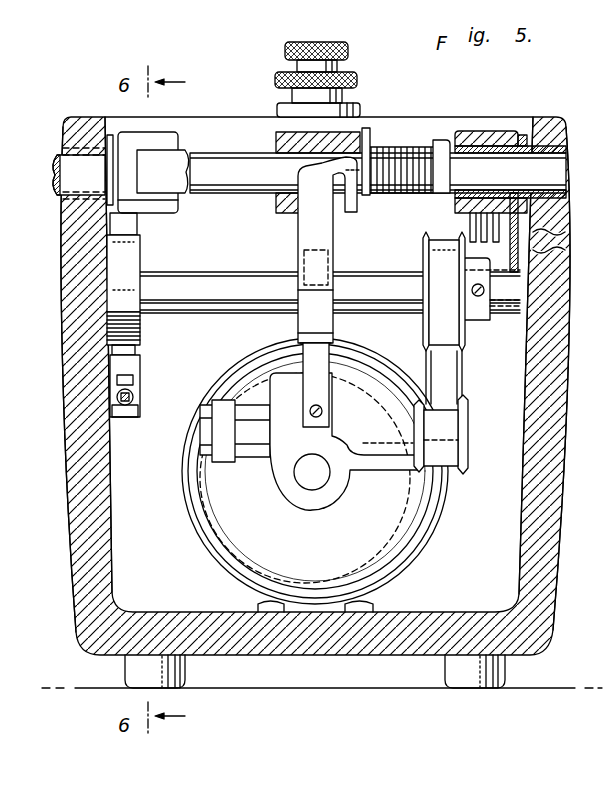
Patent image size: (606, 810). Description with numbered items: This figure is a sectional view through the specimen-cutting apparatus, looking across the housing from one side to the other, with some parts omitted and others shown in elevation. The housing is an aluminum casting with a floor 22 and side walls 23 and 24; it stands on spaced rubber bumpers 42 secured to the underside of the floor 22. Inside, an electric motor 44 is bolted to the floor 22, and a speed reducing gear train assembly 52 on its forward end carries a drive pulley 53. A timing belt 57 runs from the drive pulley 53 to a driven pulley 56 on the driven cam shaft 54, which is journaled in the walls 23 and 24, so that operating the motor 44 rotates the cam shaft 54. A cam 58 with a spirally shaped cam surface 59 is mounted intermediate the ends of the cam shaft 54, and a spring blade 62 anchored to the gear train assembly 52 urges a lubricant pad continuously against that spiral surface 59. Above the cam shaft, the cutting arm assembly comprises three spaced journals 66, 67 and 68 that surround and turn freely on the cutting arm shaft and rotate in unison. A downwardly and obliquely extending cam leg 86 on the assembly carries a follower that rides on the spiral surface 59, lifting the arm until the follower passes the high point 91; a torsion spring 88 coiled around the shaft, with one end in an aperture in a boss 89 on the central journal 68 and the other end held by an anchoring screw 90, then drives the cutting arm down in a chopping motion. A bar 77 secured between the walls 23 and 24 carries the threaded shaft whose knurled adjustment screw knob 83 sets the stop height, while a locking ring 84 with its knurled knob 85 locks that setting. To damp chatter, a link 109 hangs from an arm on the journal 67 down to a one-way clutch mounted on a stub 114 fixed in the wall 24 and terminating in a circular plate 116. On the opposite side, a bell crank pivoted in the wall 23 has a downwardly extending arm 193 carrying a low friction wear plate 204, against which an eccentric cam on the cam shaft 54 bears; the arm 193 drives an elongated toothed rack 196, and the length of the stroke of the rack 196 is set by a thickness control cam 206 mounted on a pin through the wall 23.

The floor 22 is at (357, 655).
The side wall 23 is at (70, 476).
The side wall 24 is at (555, 458).
The rubber bumpers 42 is at (178, 691).
The electric motor 44 is at (266, 520).
The speed reducing gear train assembly 52 is at (377, 441).
The drive pulley 53 is at (464, 440).
The driven cam shaft 54 is at (265, 299).
The driven pulley 56 is at (422, 254).
The timing belt 57 is at (447, 362).
The cam 58 is at (300, 328).
The spiral cam surface 59 is at (320, 345).
The spring blade 62 is at (304, 390).
The journal 66 is at (165, 131).
The journal 67 is at (472, 130).
The central journal 68 is at (276, 139).
The bar 77 is at (222, 137).
The knurled adjustment screw knob 83 is at (349, 50).
The locking ring 84 is at (346, 105).
The knurled knob 85 is at (355, 78).
The cam leg 86 is at (330, 237).
The torsion spring 88 is at (418, 197).
The boss 89 is at (374, 135).
The anchoring screw 90 is at (442, 138).
The high point 91 is at (322, 285).
The link 109 is at (470, 222).
The stub 114 is at (560, 200).
The circular plate 116 is at (548, 258).
The arm 193 is at (141, 370).
The toothed rack 196 is at (117, 397).
The wear plate 204 is at (137, 354).
The thickness control cam 206 is at (133, 270).